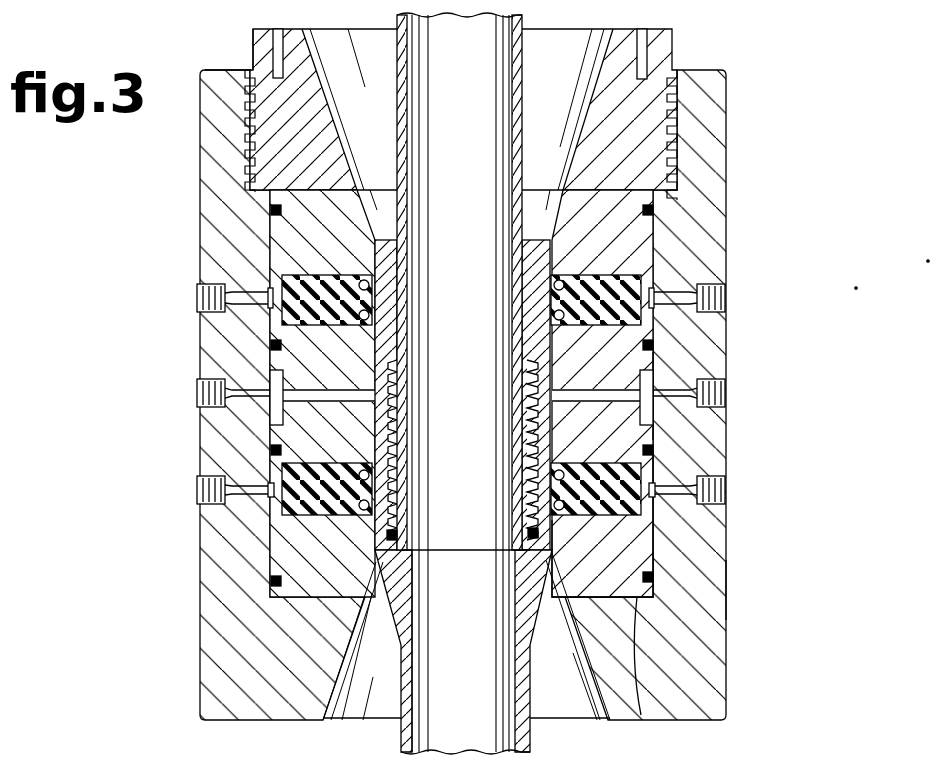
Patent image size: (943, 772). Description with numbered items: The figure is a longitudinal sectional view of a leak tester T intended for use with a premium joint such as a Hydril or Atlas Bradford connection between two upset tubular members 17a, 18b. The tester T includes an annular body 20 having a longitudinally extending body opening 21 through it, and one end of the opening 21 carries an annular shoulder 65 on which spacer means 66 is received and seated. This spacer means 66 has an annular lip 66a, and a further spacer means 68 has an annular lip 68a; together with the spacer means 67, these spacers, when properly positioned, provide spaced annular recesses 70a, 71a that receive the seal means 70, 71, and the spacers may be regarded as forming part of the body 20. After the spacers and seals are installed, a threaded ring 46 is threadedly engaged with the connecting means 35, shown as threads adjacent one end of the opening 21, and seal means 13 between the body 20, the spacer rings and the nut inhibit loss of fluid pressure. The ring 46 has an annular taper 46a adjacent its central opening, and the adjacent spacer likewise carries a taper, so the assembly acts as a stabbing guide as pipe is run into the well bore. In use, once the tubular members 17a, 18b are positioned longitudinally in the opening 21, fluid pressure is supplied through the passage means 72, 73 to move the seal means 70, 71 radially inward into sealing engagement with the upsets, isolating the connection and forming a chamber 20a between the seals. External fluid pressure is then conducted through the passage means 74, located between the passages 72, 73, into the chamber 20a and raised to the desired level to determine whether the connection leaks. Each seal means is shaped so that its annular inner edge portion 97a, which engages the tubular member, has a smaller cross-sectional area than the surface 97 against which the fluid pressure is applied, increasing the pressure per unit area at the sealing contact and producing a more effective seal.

The annular body 20 is at (702, 667).
The chamber 20a is at (665, 427).
The body opening 21 is at (650, 537).
The connecting means 35 is at (243, 70).
The threaded ring 46 is at (263, 29).
The annular taper 46a is at (337, 133).
The tubular member 17a is at (525, 68).
The spacer means 68 is at (640, 242).
The annular lip 68a is at (270, 288).
The seal means 13 is at (270, 210).
The seal means 70 is at (650, 303).
The annular recess 70a is at (284, 278).
The seal means 71 is at (650, 467).
The annular recess 71a is at (284, 470).
The passage means 72 is at (197, 298).
The passage means 73 is at (197, 489).
The passage means 74 is at (200, 373).
The spacer means 66 is at (655, 560).
The annular lip 66a is at (708, 490).
The spacer means 67 is at (645, 390).
The surface 97 is at (286, 507).
The annular inner edge portion 97a is at (549, 298).
The tester T is at (705, 600).
The tubular member 18b is at (532, 735).
The annular shoulder 65 is at (641, 715).